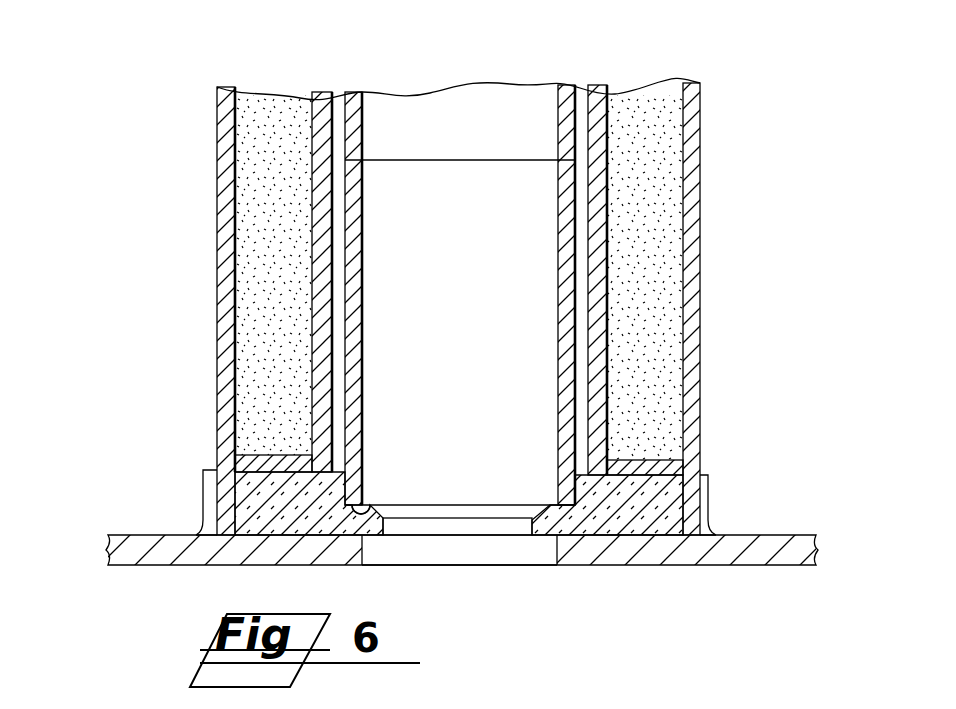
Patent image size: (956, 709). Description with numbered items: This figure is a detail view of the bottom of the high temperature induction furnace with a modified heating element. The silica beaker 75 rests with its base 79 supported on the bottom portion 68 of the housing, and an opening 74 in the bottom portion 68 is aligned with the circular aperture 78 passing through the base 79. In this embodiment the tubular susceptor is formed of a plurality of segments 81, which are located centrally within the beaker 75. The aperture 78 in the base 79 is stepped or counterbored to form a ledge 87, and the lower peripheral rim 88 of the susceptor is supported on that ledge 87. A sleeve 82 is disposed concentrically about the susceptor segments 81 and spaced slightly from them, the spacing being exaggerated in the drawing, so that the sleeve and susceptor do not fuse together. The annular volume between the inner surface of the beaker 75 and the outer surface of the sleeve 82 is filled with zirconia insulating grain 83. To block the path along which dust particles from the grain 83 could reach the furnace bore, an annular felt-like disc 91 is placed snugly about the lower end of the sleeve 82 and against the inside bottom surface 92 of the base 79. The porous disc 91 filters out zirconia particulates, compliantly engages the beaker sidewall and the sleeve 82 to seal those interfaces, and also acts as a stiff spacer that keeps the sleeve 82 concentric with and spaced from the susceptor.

The bottom portion 68 is at (180, 553).
The opening 74 is at (550, 555).
The silica beaker 75 is at (700, 216).
The circular aperture 78 is at (528, 528).
The base 79 is at (607, 532).
The segments 81 is at (358, 103).
The sleeve 82 is at (612, 355).
The zirconia insulating grain 83 is at (250, 326).
The ledge 87 is at (366, 505).
The lower peripheral rim 88 is at (511, 505).
The annular felt-like disc 91 is at (635, 460).
The inside bottom surface 92 is at (262, 470).